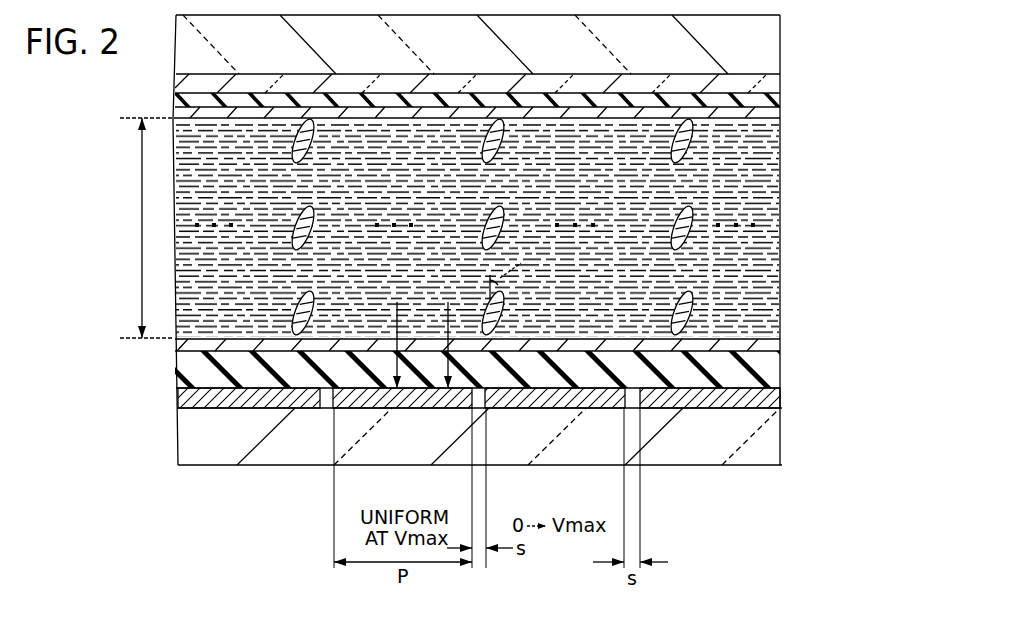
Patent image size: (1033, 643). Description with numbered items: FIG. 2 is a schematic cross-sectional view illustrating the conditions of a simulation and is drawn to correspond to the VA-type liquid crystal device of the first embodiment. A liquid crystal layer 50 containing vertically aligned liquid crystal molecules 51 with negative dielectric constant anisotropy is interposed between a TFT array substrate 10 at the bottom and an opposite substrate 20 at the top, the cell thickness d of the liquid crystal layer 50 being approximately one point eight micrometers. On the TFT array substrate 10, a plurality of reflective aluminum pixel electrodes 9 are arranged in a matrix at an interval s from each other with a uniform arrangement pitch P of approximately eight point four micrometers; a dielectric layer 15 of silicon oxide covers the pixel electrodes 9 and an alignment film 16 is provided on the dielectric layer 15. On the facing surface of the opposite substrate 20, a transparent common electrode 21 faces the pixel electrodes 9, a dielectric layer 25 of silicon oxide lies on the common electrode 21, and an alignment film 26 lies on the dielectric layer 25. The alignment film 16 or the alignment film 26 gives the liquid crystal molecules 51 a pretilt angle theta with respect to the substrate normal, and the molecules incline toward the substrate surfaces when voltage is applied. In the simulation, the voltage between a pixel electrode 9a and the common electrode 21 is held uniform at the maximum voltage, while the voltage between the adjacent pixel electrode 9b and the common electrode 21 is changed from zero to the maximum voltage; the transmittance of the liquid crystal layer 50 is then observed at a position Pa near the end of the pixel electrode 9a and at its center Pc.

The opposite substrate 20 is at (780, 30).
The common electrode 21 is at (780, 76).
The dielectric layer 25 is at (780, 101).
The alignment film 26 is at (780, 113).
The liquid crystal layer 50 is at (477, 252).
The liquid crystal molecule 51 is at (690, 303).
The alignment film 16 is at (778, 342).
The dielectric layer 15 is at (778, 380).
The pixel electrode 9 is at (479, 445).
The pixel electrode 9a is at (405, 408).
The pixel electrode 9b is at (547, 408).
The TFT array substrate 10 is at (773, 433).